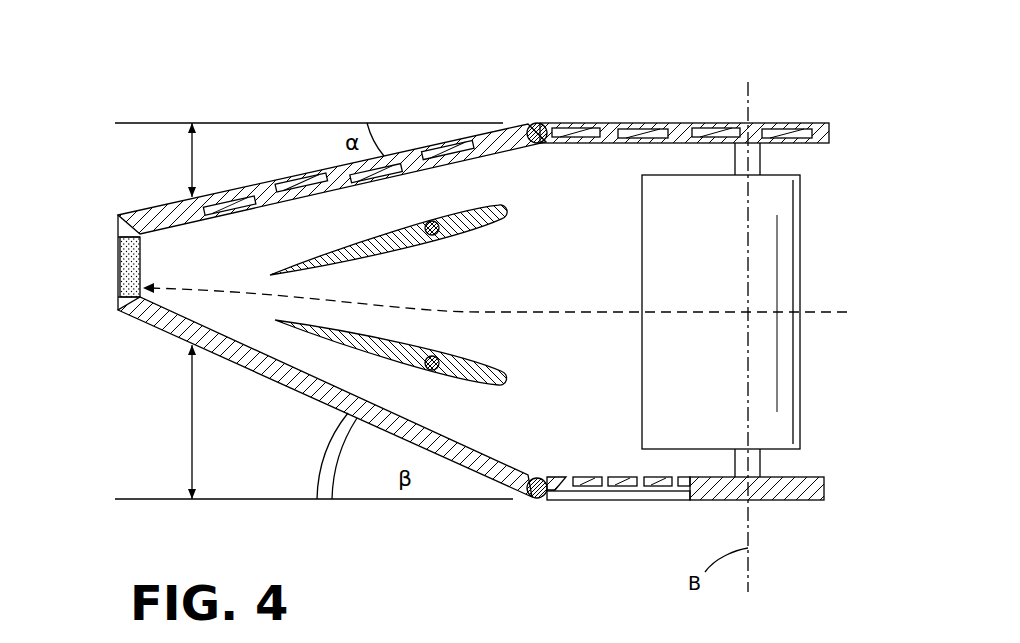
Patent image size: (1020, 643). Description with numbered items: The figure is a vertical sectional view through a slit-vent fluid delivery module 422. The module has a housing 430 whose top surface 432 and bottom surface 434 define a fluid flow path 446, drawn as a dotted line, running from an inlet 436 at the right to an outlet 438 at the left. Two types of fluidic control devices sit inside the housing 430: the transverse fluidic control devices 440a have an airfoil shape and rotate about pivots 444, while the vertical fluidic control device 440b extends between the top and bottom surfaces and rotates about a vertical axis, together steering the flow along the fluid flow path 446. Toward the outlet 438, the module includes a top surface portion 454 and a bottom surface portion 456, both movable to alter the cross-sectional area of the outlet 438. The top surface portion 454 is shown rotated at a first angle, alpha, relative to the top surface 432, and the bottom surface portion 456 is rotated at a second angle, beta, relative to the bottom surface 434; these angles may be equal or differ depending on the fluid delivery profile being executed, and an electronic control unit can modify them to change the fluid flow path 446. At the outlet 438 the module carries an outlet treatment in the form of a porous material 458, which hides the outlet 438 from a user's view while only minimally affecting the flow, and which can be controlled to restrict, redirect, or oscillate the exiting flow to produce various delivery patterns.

The slit-vent fluid delivery module 422 is at (800, 98).
The housing 430 is at (791, 506).
The top surface 432 is at (606, 123).
The bottom surface 434 is at (602, 500).
The inlet 436 is at (846, 203).
The outlet 438 is at (113, 252).
The transverse fluidic control devices 440a is at (413, 252).
The vertical fluidic control device 440b is at (800, 280).
The pivots 444 is at (433, 222).
The fluid flow path 446 is at (530, 305).
The top surface portion 454 is at (523, 124).
The bottom surface portion 456 is at (237, 367).
The porous material 458 is at (117, 262).